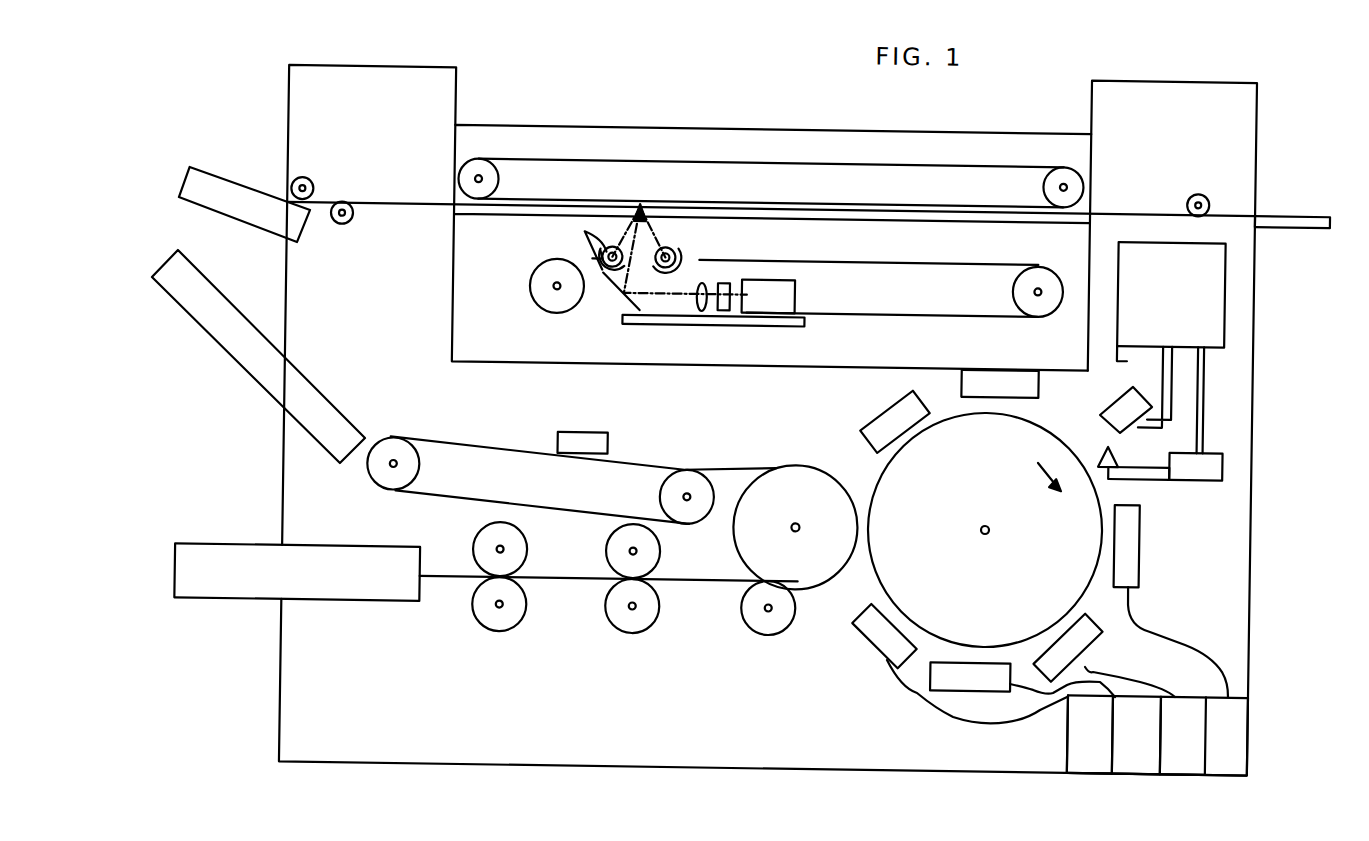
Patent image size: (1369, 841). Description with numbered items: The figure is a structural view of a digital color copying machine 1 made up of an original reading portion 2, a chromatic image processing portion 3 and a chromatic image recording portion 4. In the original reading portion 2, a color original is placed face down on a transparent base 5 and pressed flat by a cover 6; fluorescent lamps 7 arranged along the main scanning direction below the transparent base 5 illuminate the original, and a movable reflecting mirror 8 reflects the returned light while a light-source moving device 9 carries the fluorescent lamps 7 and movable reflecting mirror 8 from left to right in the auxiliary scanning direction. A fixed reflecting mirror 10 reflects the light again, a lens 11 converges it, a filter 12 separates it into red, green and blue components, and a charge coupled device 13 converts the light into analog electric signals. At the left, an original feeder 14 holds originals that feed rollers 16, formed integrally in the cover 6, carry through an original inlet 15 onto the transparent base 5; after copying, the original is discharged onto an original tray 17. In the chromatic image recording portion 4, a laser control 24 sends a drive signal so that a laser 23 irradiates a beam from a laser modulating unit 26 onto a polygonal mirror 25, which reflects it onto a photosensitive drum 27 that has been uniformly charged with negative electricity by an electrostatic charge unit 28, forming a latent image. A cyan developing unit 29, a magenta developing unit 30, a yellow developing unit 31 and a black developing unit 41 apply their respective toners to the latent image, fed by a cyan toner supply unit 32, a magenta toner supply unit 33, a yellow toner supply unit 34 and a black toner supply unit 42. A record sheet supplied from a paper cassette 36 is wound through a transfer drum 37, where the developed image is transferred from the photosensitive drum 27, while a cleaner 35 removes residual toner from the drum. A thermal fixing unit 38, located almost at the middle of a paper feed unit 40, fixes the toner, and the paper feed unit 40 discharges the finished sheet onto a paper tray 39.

The digital color copying machine 1 is at (226, 455).
The original reading portion 2 is at (235, 128).
The chromatic image processing portion 3 is at (1210, 312).
The chromatic image recording portion 4 is at (562, 778).
The transparent base 5 is at (493, 212).
The cover 6 is at (666, 140).
The fluorescent lamps 7 is at (654, 257).
The movable reflecting mirror 8 is at (537, 293).
The light-source moving device 9 is at (1040, 285).
The fixed reflecting mirror 10 is at (672, 325).
The lens 11 is at (702, 312).
The filter 12 is at (724, 300).
The charge coupled device 13 is at (790, 298).
The original feeder 14 is at (196, 189).
The original inlet 15 is at (304, 184).
The feed rollers 16 is at (479, 165).
The original tray 17 is at (1300, 218).
The laser 23 is at (1105, 455).
The laser control 24 is at (1205, 470).
The polygonal mirror 25 is at (1118, 405).
The laser modulating unit 26 is at (1155, 473).
The photosensitive drum 27 is at (890, 588).
The electrostatic charge unit 28 is at (1020, 378).
The cyan developing unit 29 is at (1142, 570).
The magenta developing unit 30 is at (1062, 648).
The yellow developing unit 31 is at (958, 682).
The cyan toner supply unit 32 is at (1238, 748).
The magenta toner supply unit 33 is at (1185, 768).
The yellow toner supply unit 34 is at (1140, 768).
The cleaner 35 is at (880, 422).
The paper cassette 36 is at (212, 590).
The transfer drum 37 is at (812, 562).
The thermal fixing unit 38 is at (597, 432).
The paper tray 39 is at (193, 318).
The paper feed unit 40 is at (405, 452).
The black developing unit 41 is at (893, 650).
The black toner supply unit 42 is at (1082, 768).